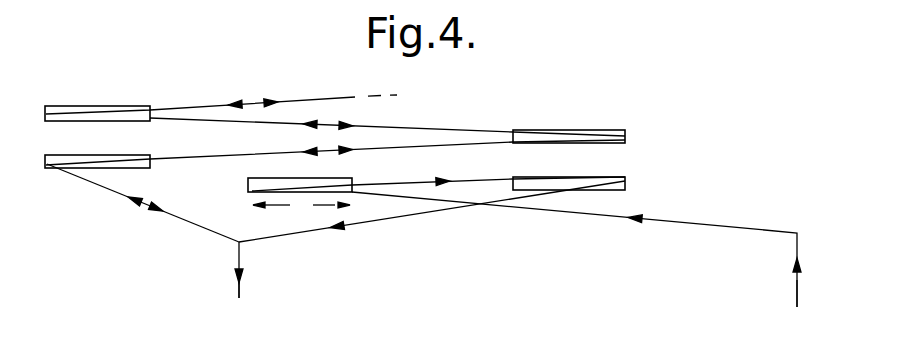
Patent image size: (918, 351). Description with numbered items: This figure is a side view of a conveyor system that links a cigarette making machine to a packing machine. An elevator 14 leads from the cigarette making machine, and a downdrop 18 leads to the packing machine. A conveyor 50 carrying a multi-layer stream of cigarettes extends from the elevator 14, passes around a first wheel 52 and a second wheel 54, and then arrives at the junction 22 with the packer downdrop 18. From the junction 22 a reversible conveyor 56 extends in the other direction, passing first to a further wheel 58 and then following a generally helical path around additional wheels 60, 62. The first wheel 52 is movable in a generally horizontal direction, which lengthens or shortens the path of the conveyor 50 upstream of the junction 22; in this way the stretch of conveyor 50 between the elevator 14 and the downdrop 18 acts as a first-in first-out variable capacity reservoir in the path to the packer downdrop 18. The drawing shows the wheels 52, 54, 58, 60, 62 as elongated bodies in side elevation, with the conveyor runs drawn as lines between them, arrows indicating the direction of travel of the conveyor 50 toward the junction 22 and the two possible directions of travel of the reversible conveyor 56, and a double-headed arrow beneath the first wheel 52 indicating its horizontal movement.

The elevator 14 is at (798, 292).
The downdrop 18 is at (243, 258).
The junction 22 is at (238, 240).
The conveyor 50 is at (738, 231).
The first wheel 52 is at (350, 178).
The second wheel 54 is at (607, 177).
The reversible conveyor 56 is at (180, 219).
The further wheel 58 is at (90, 166).
The wheel 60 is at (613, 129).
The wheel 62 is at (97, 107).